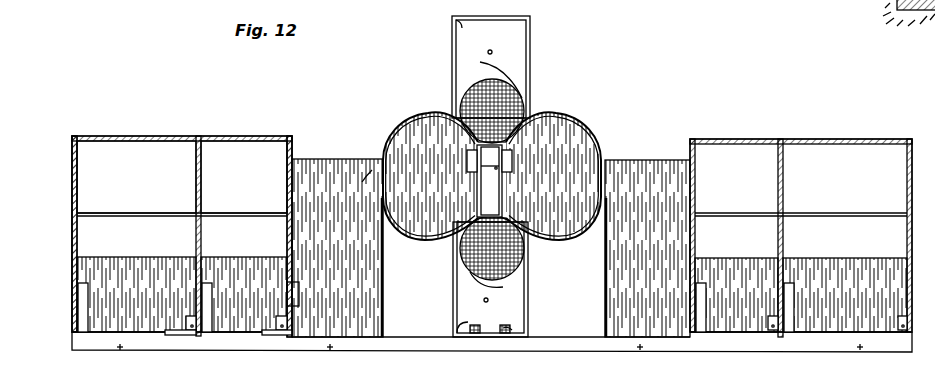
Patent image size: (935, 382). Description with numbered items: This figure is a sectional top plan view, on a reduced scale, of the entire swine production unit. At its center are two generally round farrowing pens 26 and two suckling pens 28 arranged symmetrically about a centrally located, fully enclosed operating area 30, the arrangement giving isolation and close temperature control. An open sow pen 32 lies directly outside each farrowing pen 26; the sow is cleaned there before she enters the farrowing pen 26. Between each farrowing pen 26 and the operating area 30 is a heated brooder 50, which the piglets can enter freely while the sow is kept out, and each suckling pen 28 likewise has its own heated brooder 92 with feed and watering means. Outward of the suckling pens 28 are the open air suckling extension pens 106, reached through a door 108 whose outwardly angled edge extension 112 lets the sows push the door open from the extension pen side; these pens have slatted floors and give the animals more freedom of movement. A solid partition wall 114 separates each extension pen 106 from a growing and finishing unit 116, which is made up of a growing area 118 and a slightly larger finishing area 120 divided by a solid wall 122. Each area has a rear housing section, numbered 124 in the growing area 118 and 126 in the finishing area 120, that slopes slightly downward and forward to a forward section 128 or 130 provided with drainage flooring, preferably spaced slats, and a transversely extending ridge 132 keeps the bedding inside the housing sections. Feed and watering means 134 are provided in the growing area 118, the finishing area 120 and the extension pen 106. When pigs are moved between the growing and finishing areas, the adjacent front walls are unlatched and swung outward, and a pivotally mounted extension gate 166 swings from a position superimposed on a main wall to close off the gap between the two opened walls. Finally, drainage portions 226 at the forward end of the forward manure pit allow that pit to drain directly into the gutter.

The farrowing pen 26 is at (492, 179).
The suckling pen 28 is at (492, 177).
The operating area 30 is at (488, 180).
The sow pen 32 is at (491, 176).
The brooder 50 is at (490, 156).
The brooder 92 is at (470, 208).
The suckling extension pen 106 is at (498, 248).
The door 108 is at (371, 170).
The outwardly angled edge extension 112 is at (337, 248).
The solid partition wall 114 is at (291, 272).
The growing and finishing unit 116 is at (197, 133).
The growing area 118 is at (249, 158).
The finishing area 120 is at (118, 158).
The solid wall 122 is at (201, 243).
The rear housing section 124 is at (281, 173).
The rear housing section 126 is at (82, 183).
The forward section 128 is at (244, 294).
The forward section 130 is at (136, 294).
The transversely extending ridge 132 is at (148, 199).
The feed and watering means 134 is at (188, 322).
The extension gate 166 is at (183, 337).
The drainage portions 226 is at (520, 330).